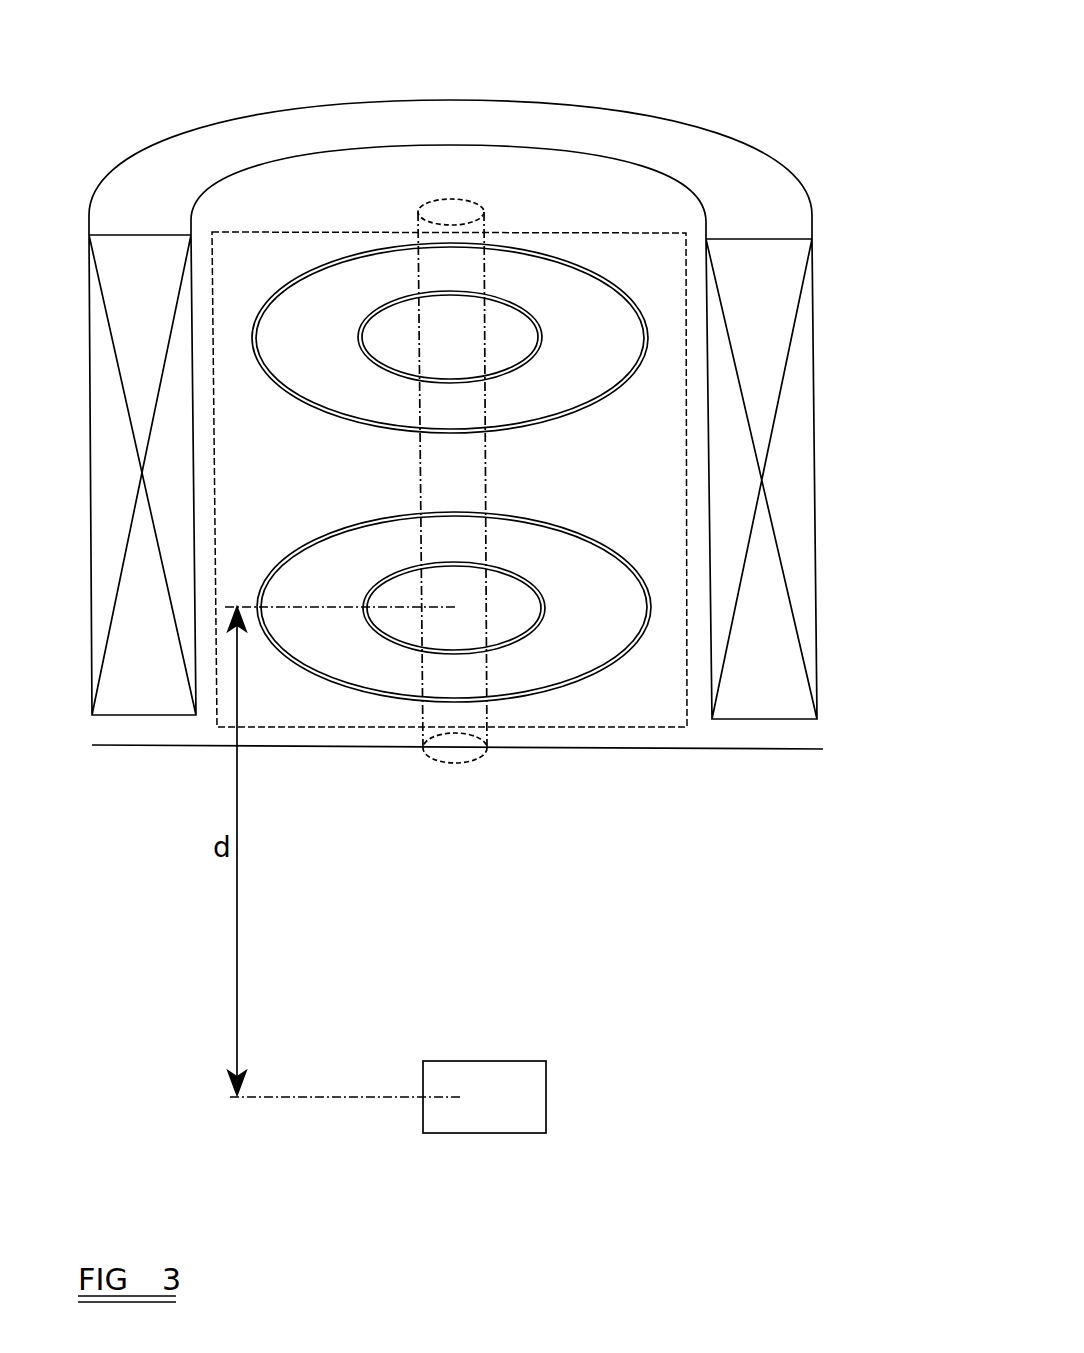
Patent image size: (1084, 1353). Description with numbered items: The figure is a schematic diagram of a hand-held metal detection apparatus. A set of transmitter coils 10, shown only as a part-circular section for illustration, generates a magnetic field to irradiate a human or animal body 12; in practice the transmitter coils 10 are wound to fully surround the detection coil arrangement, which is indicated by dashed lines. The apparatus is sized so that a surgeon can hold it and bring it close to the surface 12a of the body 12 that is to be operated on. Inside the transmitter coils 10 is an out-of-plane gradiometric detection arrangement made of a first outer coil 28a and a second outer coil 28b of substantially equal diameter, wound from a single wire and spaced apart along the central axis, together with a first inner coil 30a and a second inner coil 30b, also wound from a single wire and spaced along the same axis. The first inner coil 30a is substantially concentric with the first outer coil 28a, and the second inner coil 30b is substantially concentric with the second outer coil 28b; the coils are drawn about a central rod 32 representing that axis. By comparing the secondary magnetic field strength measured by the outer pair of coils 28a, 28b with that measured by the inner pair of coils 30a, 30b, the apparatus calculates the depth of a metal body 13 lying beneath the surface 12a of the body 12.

The transmitter coils 10 is at (772, 288).
The body 12 is at (457, 792).
The surface of the body 12a is at (793, 748).
The metal body 13 is at (505, 1060).
The first outer coil 28a is at (637, 373).
The second outer coil 28b is at (643, 632).
The first inner coil 30a is at (532, 313).
The second inner coil 30b is at (543, 602).
The central shaft 32 is at (467, 270).